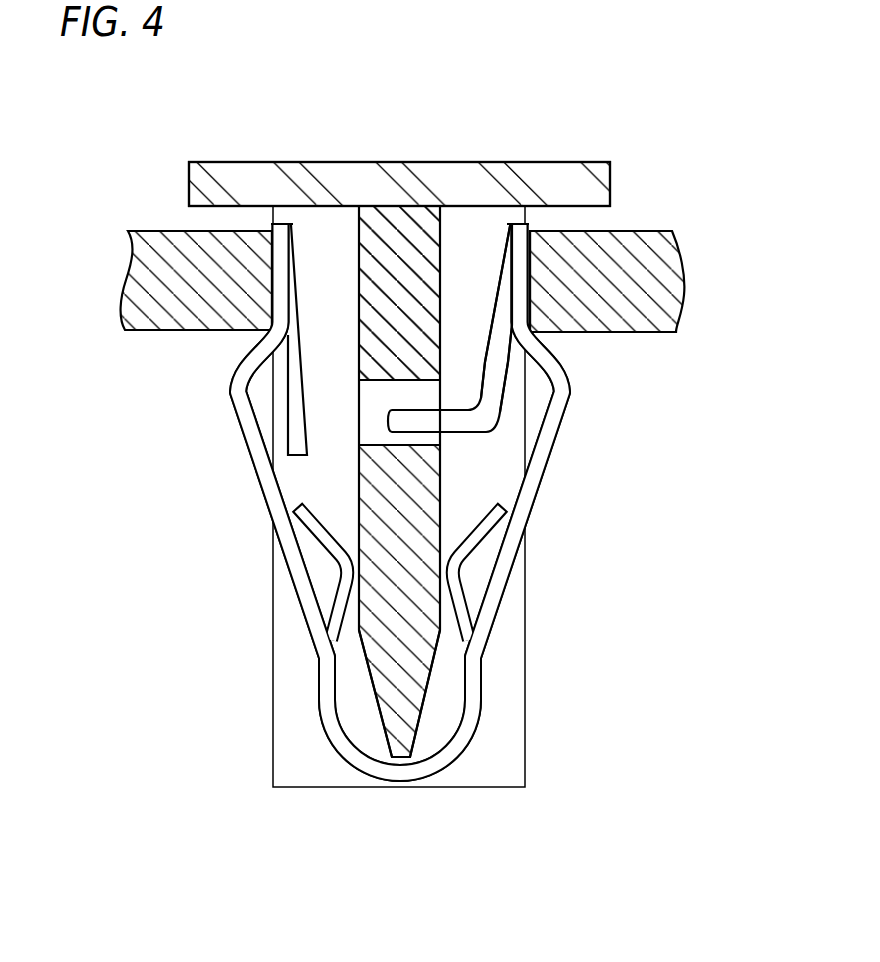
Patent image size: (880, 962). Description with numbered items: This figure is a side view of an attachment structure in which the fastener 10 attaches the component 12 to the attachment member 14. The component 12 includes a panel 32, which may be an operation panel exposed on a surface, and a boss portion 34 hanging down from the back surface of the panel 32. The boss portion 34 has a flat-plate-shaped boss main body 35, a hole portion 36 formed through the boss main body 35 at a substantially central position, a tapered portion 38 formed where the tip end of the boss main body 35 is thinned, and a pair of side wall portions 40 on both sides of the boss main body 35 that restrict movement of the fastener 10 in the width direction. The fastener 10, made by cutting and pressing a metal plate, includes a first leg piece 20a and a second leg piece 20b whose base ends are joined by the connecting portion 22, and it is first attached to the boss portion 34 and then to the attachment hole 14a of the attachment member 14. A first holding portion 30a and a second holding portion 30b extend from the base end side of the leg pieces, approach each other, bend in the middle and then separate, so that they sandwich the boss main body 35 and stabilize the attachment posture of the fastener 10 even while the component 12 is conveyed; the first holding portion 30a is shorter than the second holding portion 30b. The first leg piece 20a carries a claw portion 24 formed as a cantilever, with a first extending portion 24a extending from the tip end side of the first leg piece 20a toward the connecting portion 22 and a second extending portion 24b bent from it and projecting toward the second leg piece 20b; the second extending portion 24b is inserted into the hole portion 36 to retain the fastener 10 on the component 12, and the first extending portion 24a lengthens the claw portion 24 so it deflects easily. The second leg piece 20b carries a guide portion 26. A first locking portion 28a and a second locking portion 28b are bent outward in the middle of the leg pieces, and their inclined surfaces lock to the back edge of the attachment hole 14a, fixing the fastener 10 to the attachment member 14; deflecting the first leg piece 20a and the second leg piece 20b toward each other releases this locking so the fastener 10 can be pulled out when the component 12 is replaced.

The fastener 10 is at (468, 773).
The component 12 is at (570, 180).
The attachment member 14 is at (640, 250).
The attachment hole 14a is at (533, 280).
The first leg piece 20a is at (521, 573).
The second leg piece 20b is at (282, 573).
The connecting portion 22 is at (403, 784).
The claw portion 24 is at (487, 420).
The first extending portion 24a is at (498, 363).
The second extending portion 24b is at (452, 425).
The guide portion 26 is at (298, 403).
The first locking portion 28a is at (556, 347).
The second locking portion 28b is at (247, 342).
The first holding portion 30a is at (458, 598).
The second holding portion 30b is at (328, 598).
The panel 32 is at (300, 186).
The boss portion 34 is at (448, 251).
The boss main body 35 is at (377, 252).
The hole portion 36 is at (383, 380).
The tapered portion 38 is at (388, 712).
The side wall portions 40 is at (528, 732).